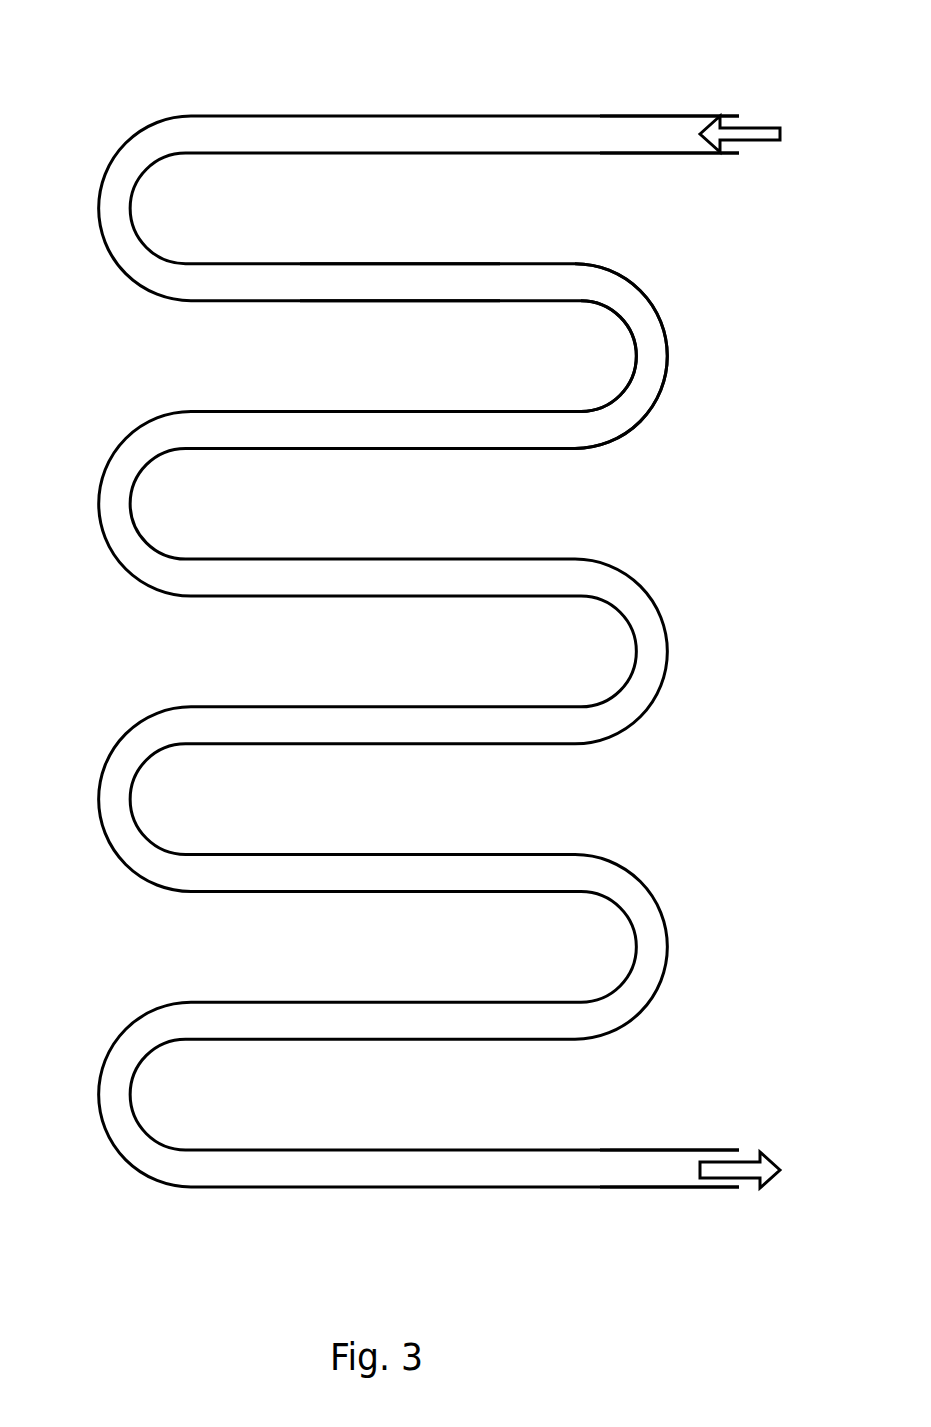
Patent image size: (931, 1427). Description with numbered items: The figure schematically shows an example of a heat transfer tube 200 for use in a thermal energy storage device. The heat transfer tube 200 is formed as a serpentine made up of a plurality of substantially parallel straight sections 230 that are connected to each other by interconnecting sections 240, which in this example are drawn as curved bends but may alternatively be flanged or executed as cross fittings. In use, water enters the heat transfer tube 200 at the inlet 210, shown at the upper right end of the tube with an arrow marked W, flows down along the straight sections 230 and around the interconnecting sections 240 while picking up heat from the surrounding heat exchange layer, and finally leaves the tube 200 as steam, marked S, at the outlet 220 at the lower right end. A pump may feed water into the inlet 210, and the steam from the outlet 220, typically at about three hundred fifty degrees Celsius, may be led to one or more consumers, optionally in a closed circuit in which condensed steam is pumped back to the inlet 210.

The heat transfer tube 200 is at (131, 80).
The inlet 210 is at (699, 152).
The outlet 220 is at (682, 1181).
The straight sections 230 is at (383, 278).
The interconnecting sections 240 is at (651, 350).